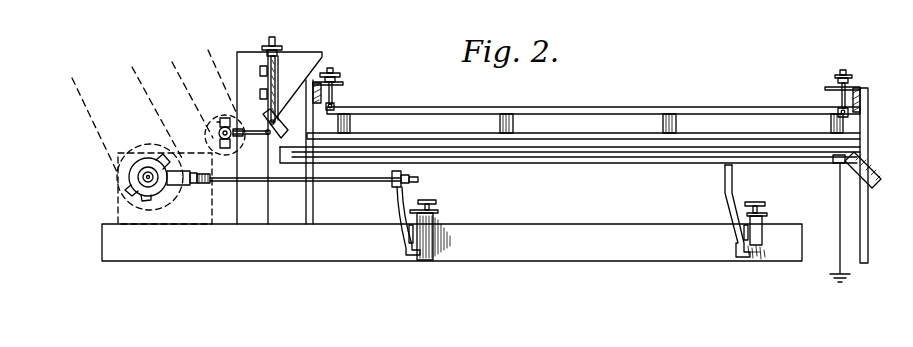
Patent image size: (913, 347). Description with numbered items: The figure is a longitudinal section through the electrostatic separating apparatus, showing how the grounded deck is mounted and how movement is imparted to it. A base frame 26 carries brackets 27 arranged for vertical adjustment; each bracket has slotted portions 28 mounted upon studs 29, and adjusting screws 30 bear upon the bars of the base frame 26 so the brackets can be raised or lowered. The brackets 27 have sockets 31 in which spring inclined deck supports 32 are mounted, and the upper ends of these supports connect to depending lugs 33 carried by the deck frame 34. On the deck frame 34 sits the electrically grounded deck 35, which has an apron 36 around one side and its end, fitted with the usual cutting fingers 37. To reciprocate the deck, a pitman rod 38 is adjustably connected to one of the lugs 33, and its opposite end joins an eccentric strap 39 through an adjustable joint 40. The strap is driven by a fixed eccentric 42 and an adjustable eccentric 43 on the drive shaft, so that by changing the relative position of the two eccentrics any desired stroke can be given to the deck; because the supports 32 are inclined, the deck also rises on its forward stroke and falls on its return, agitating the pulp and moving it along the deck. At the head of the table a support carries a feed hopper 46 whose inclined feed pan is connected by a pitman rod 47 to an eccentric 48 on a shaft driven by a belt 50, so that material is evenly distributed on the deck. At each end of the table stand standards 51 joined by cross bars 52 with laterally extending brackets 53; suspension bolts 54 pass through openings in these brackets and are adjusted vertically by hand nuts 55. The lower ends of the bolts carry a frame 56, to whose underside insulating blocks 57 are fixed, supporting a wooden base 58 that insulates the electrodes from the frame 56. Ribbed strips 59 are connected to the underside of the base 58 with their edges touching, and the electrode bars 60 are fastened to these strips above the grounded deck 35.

The base frame 26 is at (452, 242).
The brackets 27 is at (435, 222).
The slotted portions 28 is at (410, 225).
The studs 29 is at (448, 236).
The adjusting screws 30 is at (430, 202).
The sockets 31 is at (444, 257).
The spring inclined deck supports 32 is at (398, 203).
The depending lugs 33 is at (732, 183).
The deck frame 34 is at (636, 163).
The electrically grounded deck 35 is at (590, 157).
The apron 36 is at (873, 185).
The cutting fingers 37 is at (757, 247).
The pitman rod 38 is at (341, 183).
The eccentric strap 39 is at (171, 184).
The adjustable joint 40 is at (172, 165).
The fixed eccentric 42 is at (140, 178).
The adjustable eccentric 43 is at (145, 168).
The feed hopper 46 is at (297, 58).
The pitman rod 47 is at (256, 138).
The eccentric 48 is at (220, 118).
The belt 50 is at (282, 123).
The standards 51 is at (867, 120).
The cross bars 52 is at (863, 100).
The laterally extending brackets 53 is at (854, 88).
The suspension bolts 54 is at (837, 89).
The hand nuts 55 is at (334, 73).
The frame 56 is at (355, 109).
The insulating blocks 57 is at (512, 117).
The wooden base 58 is at (577, 134).
The ribbed strips 59 is at (420, 138).
The electrode bars 60 is at (722, 142).